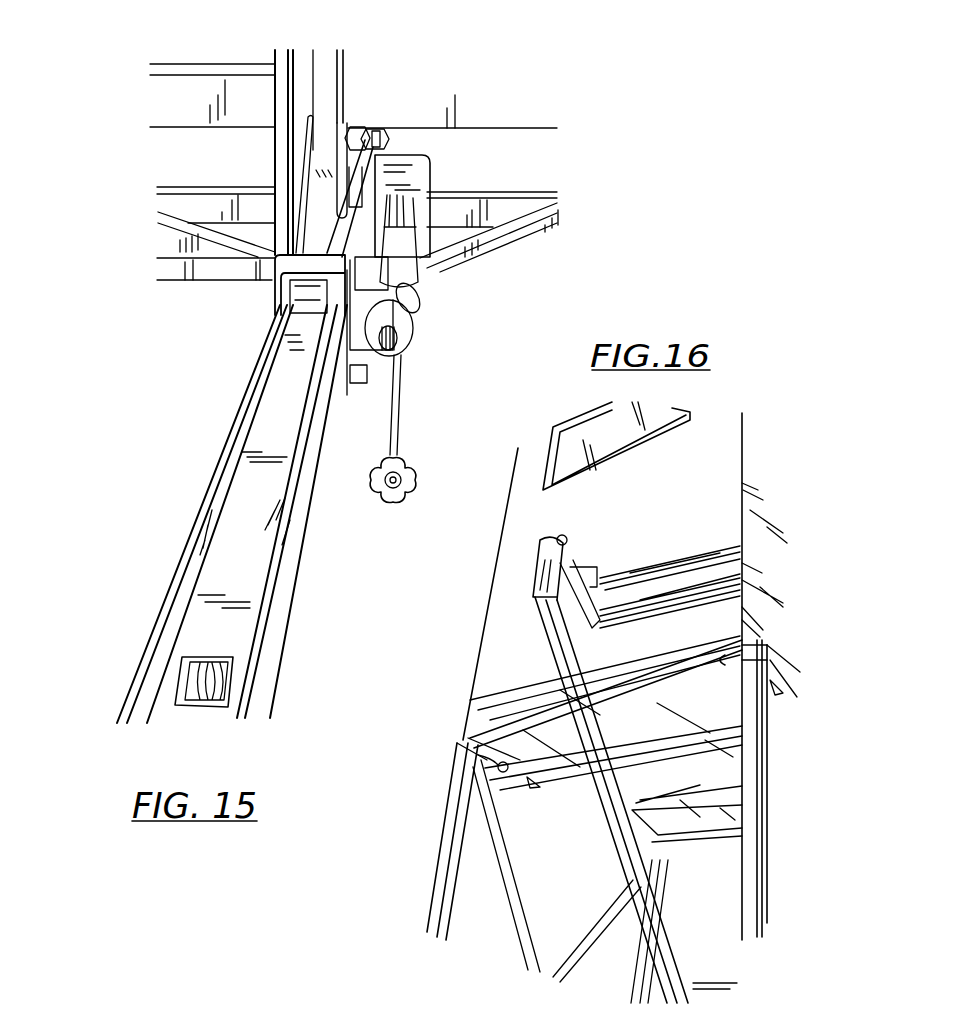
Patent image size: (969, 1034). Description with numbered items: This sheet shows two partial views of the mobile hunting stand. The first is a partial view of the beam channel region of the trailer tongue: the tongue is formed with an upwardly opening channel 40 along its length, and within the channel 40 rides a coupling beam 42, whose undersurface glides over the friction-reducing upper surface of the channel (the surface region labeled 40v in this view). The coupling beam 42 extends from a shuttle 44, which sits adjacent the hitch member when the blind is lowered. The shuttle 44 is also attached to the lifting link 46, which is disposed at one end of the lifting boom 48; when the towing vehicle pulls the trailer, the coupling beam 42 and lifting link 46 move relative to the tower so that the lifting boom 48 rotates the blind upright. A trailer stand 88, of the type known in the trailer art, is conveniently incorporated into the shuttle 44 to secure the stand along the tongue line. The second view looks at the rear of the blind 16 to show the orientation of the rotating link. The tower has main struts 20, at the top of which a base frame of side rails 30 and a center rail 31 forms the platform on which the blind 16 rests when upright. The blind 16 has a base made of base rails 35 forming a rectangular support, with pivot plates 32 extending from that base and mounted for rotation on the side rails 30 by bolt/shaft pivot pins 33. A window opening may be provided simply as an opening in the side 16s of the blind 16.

In FIG. 15, the shuttle 44 is at (317, 213).
In FIG. 15, the lifting boom 48 is at (330, 72).
In FIG. 15, the lifting link 46 is at (347, 125).
In FIG. 15, the coupling beam 42 is at (287, 303).
In FIG. 15, the channel 40 is at (213, 497).
In FIG. 15, the rail groove 40v is at (222, 562).
In FIG. 15, the stand 88 is at (413, 277).
In FIG. 16, the blind 16 is at (526, 512).
In FIG. 16, the side of the blind 16s is at (512, 627).
In FIG. 16, the pivot pins 33 is at (487, 777).
In FIG. 16, the main struts 20 is at (432, 893).
In FIG. 16, the pivot plates 32 is at (497, 768).
In FIG. 16, the side rails 30 is at (627, 812).
In FIG. 16, the center rail 31 is at (713, 747).
In FIG. 16, the base rails 35 is at (767, 647).